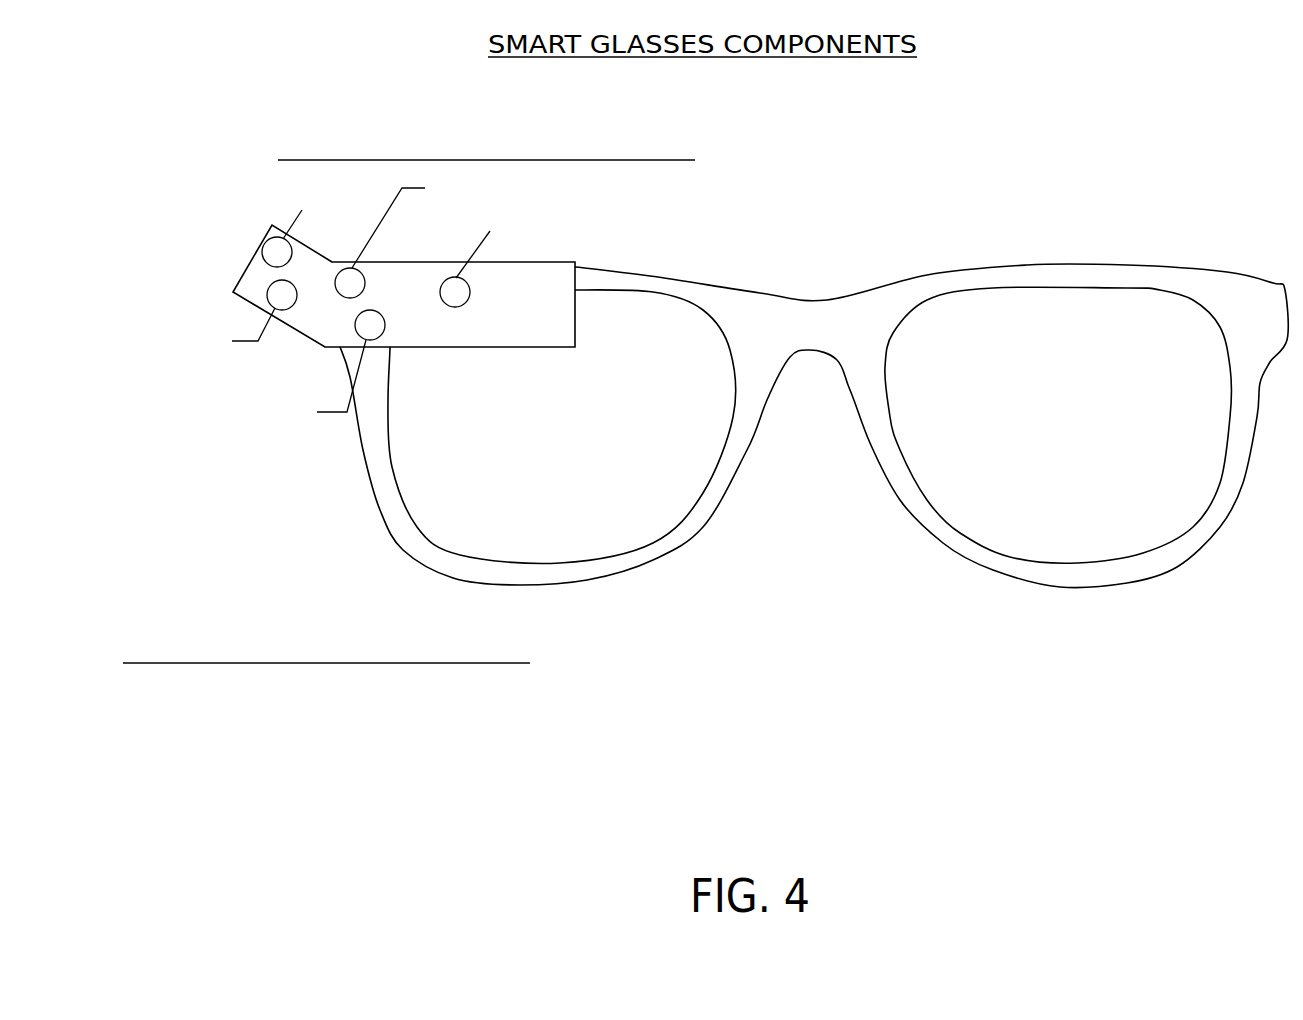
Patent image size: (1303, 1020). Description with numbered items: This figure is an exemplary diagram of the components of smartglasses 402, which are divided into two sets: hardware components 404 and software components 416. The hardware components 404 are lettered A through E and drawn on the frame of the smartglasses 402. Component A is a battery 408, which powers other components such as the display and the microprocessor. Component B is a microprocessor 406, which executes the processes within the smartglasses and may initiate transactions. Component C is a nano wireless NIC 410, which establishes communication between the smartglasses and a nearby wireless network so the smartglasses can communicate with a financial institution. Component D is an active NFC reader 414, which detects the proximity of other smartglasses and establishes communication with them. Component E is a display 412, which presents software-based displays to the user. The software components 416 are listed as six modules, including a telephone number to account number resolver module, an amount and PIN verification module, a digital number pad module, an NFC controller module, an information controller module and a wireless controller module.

The smartglasses 402 is at (1083, 263).
The hardware components 404 is at (700, 148).
The microprocessor 406 is at (135, 325).
The battery 408 is at (262, 196).
The nano wireless NIC 410 is at (880, 187).
The display 412 is at (590, 232).
The active NFC reader 414 is at (183, 472).
The software components 416 is at (533, 648).